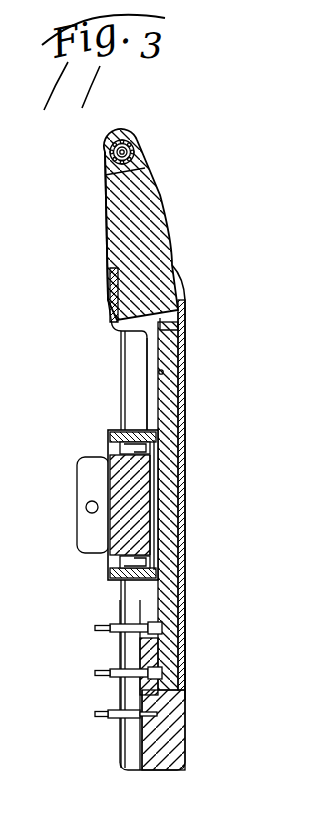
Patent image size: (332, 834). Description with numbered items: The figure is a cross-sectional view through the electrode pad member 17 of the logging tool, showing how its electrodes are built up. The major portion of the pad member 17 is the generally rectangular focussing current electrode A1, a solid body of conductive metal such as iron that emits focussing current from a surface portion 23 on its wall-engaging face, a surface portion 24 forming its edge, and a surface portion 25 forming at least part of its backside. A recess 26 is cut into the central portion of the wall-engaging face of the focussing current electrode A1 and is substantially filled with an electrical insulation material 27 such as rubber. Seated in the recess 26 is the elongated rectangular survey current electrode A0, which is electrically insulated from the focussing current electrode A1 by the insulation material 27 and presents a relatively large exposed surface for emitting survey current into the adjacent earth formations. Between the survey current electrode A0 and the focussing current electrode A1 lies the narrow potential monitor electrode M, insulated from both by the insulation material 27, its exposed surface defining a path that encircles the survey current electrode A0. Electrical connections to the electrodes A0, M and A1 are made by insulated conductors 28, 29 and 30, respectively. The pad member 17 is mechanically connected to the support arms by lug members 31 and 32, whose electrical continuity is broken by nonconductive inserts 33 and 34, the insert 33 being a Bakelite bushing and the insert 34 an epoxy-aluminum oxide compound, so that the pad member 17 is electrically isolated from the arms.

The electrode pad member 17 is at (197, 312).
The wall-engaging face surface portion 23 is at (183, 718).
The edge surface portion 24 is at (158, 771).
The backside surface portion 25 is at (145, 350).
The recess 26 is at (159, 372).
The electrical insulation material 27 is at (170, 403).
The insulated conductor 28 is at (105, 626).
The insulated conductor 29 is at (106, 672).
The insulated conductor 30 is at (106, 713).
The lug member 31 is at (145, 152).
The lug member 32 is at (77, 502).
The nonconductive insert 33 is at (108, 155).
The nonconductive insert 34 is at (137, 538).
The survey current electrode A0 is at (186, 458).
The focussing current electrode A1 is at (167, 747).
The potential monitor electrode M is at (184, 670).